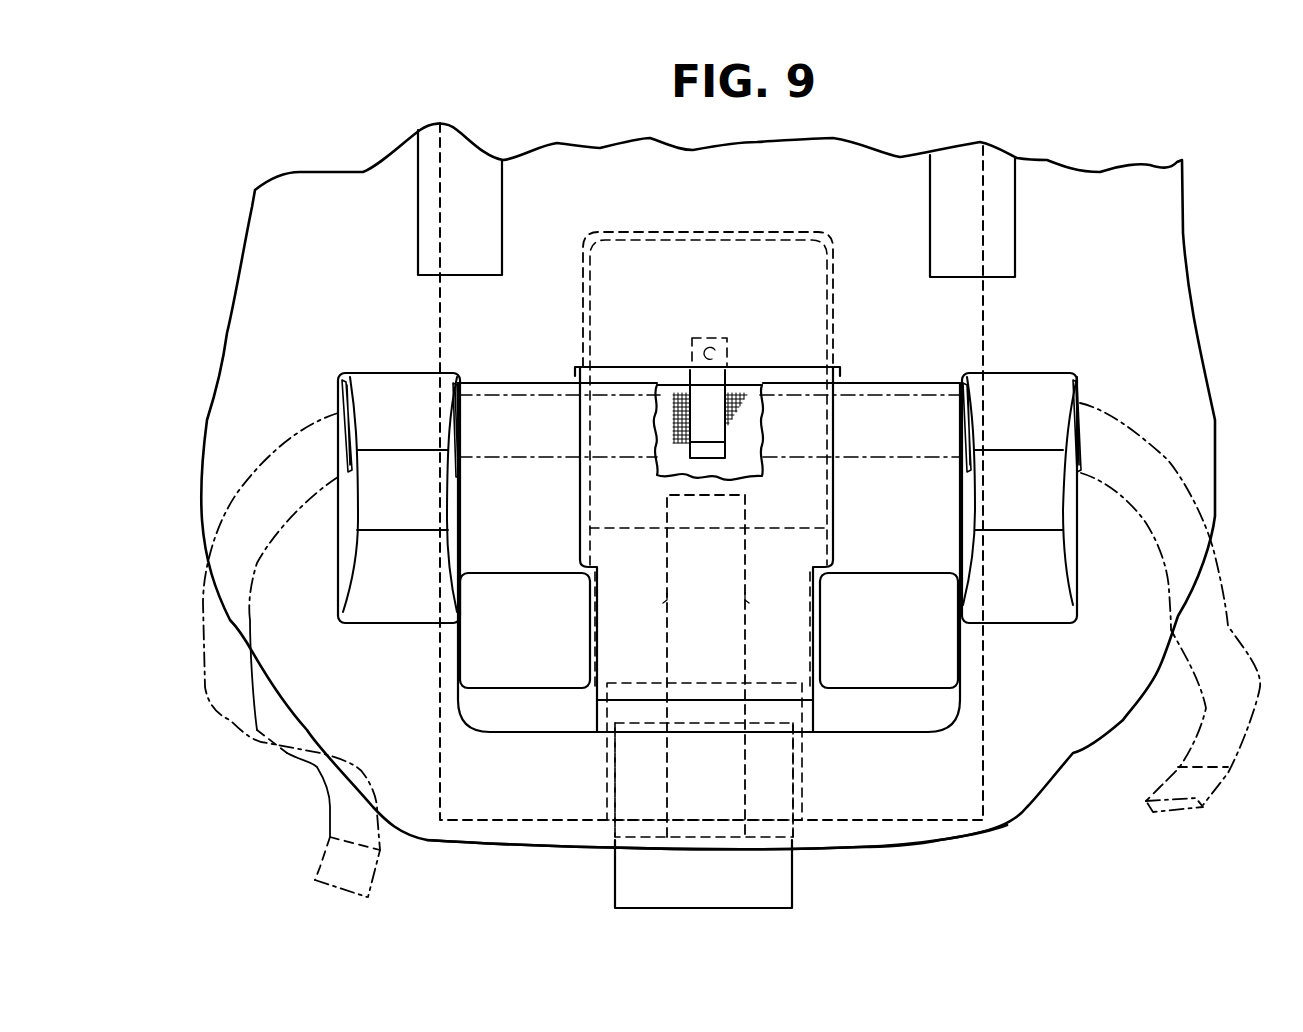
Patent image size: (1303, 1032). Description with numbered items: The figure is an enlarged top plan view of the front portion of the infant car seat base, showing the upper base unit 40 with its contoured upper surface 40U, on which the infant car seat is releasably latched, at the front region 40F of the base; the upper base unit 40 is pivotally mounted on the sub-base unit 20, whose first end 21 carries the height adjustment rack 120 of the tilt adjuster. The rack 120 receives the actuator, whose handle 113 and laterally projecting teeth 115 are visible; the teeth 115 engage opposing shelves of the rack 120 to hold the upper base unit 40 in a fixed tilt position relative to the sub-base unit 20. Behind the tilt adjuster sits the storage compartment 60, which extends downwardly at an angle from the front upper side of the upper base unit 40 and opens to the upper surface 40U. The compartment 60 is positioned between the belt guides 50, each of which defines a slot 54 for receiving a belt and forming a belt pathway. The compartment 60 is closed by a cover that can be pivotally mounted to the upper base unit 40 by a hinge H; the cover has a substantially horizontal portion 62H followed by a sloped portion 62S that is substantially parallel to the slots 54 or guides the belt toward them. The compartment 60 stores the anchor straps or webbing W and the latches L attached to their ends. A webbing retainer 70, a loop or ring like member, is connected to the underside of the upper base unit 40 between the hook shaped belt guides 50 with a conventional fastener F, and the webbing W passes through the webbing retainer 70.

The upper base unit 40 is at (877, 180).
The contoured upper surface 40U is at (767, 201).
The front portion of body panel 40F is at (867, 848).
The sub-base unit 20 is at (955, 322).
The first end 21 is at (468, 823).
The belt guide 50 is at (370, 400).
The slot 54 is at (346, 382).
The storage compartment 60 is at (610, 265).
The sloped portion 62S is at (600, 425).
The horizontal portion 62H is at (785, 617).
The webbing retainer 70 is at (697, 400).
The handle 113 is at (628, 858).
The teeth 115 is at (632, 793).
The height adjustment rack 120 is at (805, 772).
The fastener F is at (712, 340).
The anchor straps/webbing W is at (215, 690).
The hinge H is at (840, 372).
The latches L is at (325, 870).